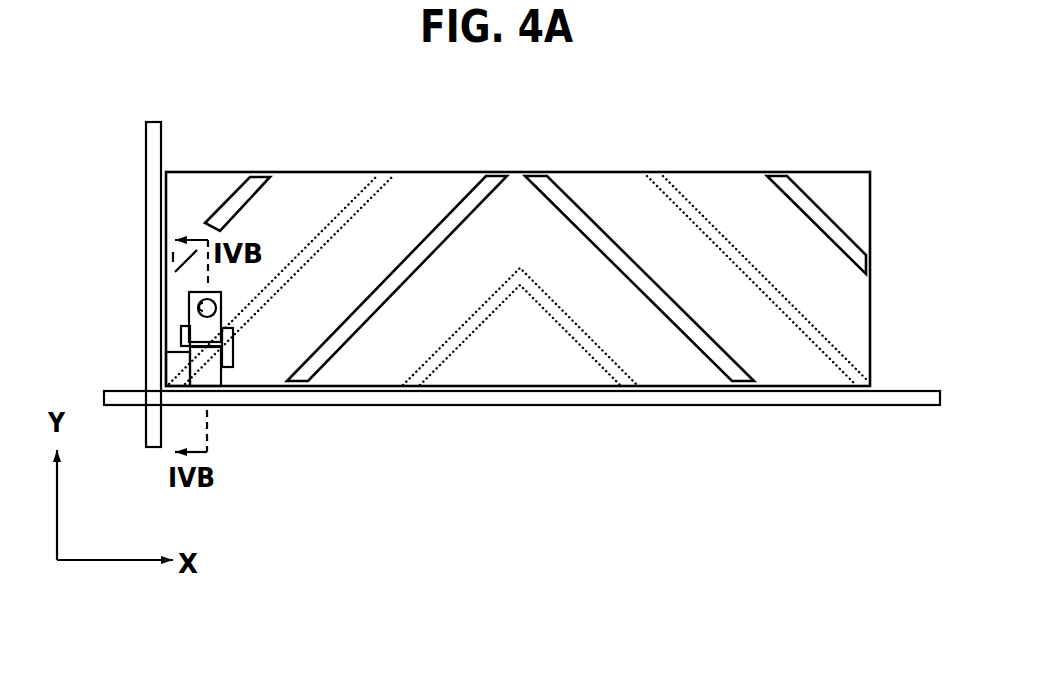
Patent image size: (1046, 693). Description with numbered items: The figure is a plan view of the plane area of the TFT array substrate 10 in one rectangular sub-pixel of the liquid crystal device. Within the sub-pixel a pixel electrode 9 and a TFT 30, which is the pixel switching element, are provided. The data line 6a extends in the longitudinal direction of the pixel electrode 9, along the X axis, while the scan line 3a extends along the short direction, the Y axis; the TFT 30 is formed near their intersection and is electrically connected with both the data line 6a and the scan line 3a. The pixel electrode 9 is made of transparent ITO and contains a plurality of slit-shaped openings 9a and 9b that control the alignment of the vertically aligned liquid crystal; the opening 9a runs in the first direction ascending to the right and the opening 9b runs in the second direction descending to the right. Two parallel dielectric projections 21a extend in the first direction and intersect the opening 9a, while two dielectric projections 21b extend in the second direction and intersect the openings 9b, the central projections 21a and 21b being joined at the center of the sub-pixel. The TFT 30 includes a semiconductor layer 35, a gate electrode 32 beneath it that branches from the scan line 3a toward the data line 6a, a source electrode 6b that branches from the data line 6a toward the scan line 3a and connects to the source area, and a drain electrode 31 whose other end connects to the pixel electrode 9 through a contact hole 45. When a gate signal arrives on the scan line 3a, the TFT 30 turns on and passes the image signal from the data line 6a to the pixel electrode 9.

The TFT array substrate 10 is at (893, 221).
The scan line 3a is at (150, 231).
The data line 6a is at (877, 406).
The pixel electrode 9 is at (528, 287).
The opening 9a is at (212, 221).
The opening 9b is at (601, 233).
The dielectric projection 21a is at (330, 219).
The dielectric projection 21b is at (704, 223).
The TFT 30 is at (200, 371).
The drain electrode 31 is at (196, 293).
The contact hole 45 is at (198, 305).
The semiconductor layer 35 is at (183, 330).
The gate electrode 32 is at (178, 344).
The source electrode 6b is at (213, 372).